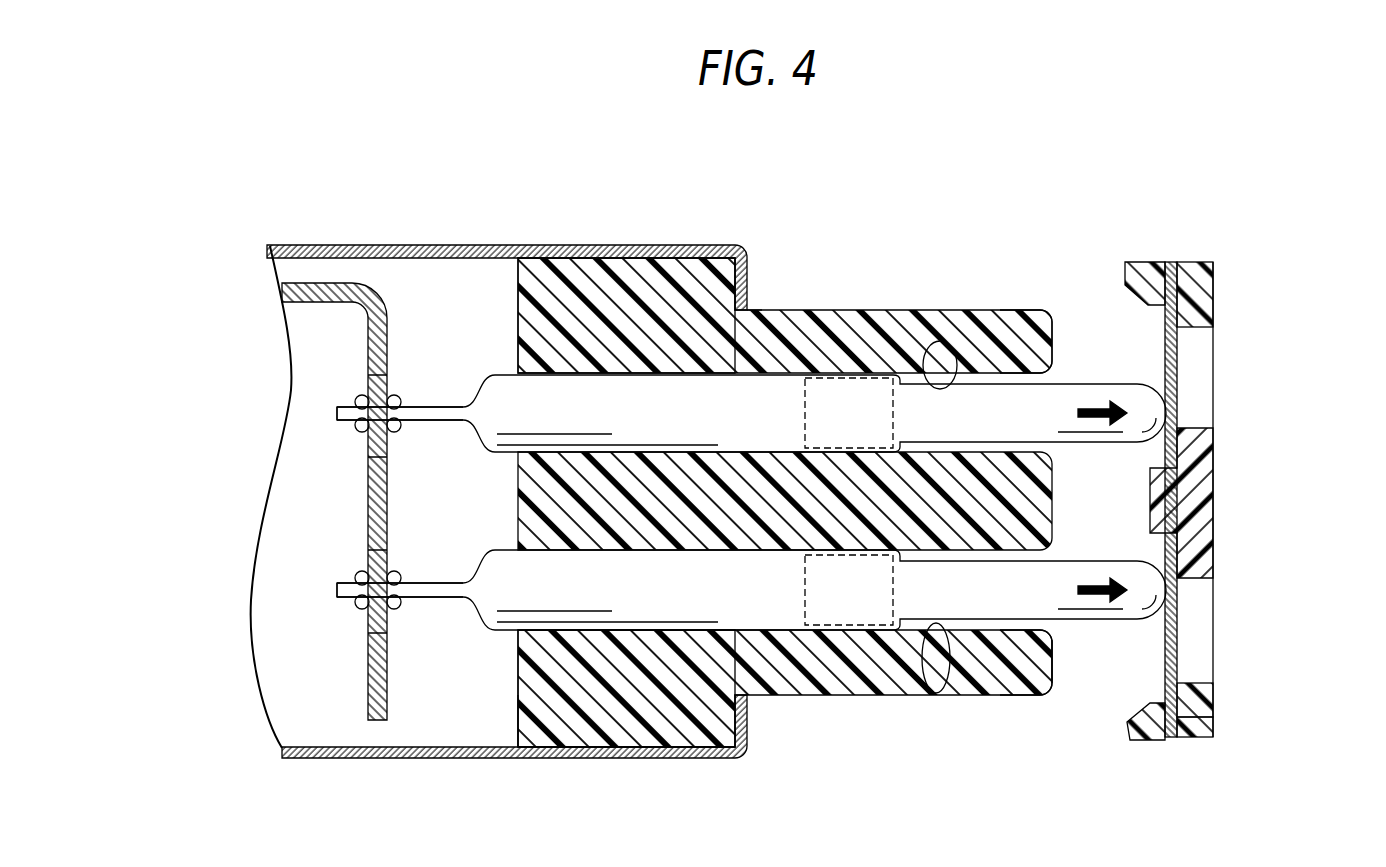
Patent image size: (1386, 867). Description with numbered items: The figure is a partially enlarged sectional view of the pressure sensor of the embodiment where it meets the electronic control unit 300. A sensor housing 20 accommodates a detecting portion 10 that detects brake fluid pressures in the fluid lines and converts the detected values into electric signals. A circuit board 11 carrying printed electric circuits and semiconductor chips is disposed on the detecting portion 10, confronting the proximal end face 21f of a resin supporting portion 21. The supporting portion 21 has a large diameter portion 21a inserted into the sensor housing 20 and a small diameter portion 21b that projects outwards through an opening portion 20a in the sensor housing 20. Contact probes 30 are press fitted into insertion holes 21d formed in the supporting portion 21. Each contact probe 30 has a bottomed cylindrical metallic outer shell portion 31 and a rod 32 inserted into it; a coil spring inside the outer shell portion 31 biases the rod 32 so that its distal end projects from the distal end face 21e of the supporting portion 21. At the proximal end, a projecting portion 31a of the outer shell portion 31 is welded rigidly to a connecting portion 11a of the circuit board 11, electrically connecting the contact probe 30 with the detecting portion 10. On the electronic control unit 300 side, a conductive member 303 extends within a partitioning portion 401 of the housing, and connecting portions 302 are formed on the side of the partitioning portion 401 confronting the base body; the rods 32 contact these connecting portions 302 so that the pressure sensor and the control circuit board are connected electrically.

The detecting portion 10 is at (300, 568).
The circuit board 11 is at (288, 506).
The connecting portion 11a is at (372, 382).
The sensor housing 20 is at (338, 232).
The opening portion 20a is at (760, 324).
The supporting portion 21 is at (816, 495).
The large diameter portion 21a is at (570, 275).
The small diameter portion 21b is at (1020, 318).
The insertion hole 21d is at (928, 342).
The distal end face 21e is at (1055, 648).
The proximal end face 21f is at (518, 695).
The contact probe 30 is at (1084, 373).
The outer shell portion 31 is at (751, 492).
The projecting portion 31a is at (437, 408).
The rod 32 is at (1133, 402).
The electronic control unit 300 is at (1232, 504).
The connecting portion 302 is at (1180, 367).
The conductive member 303 is at (1180, 707).
The partitioning portion 401 is at (1207, 466).